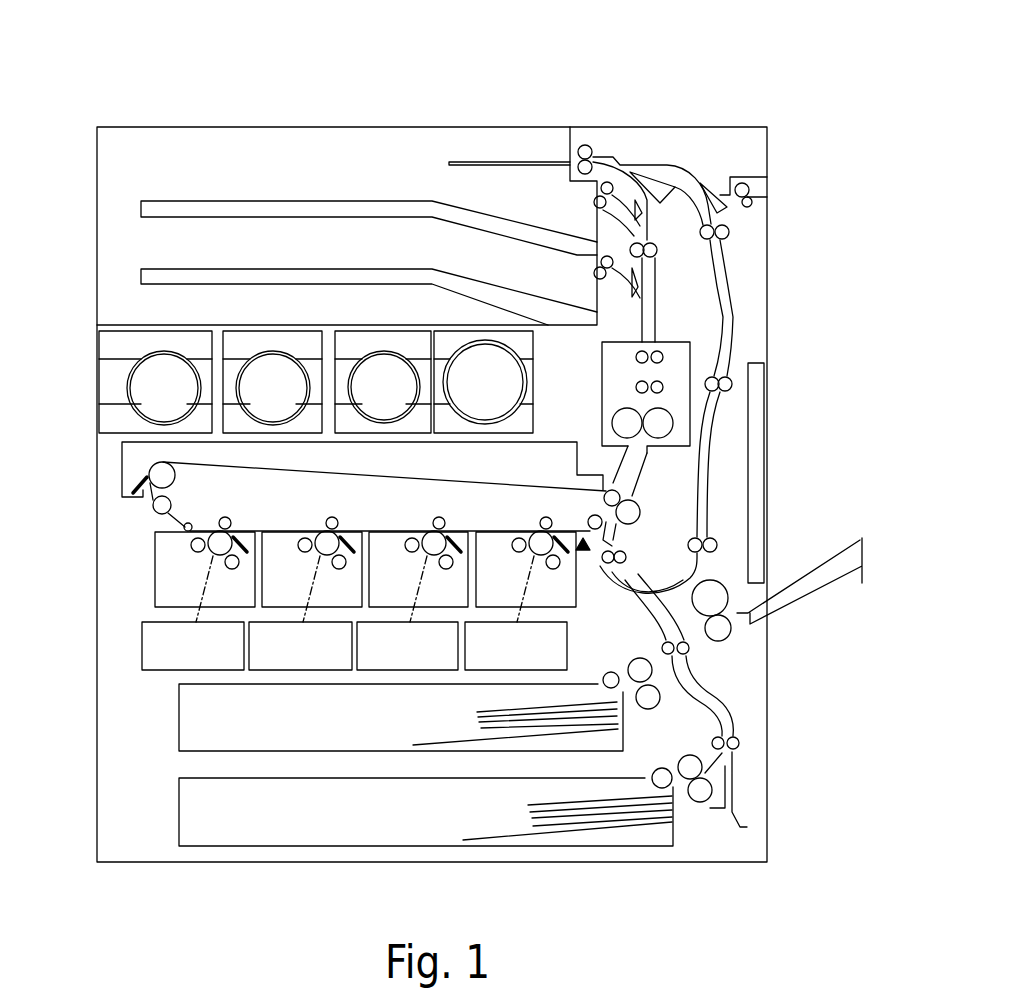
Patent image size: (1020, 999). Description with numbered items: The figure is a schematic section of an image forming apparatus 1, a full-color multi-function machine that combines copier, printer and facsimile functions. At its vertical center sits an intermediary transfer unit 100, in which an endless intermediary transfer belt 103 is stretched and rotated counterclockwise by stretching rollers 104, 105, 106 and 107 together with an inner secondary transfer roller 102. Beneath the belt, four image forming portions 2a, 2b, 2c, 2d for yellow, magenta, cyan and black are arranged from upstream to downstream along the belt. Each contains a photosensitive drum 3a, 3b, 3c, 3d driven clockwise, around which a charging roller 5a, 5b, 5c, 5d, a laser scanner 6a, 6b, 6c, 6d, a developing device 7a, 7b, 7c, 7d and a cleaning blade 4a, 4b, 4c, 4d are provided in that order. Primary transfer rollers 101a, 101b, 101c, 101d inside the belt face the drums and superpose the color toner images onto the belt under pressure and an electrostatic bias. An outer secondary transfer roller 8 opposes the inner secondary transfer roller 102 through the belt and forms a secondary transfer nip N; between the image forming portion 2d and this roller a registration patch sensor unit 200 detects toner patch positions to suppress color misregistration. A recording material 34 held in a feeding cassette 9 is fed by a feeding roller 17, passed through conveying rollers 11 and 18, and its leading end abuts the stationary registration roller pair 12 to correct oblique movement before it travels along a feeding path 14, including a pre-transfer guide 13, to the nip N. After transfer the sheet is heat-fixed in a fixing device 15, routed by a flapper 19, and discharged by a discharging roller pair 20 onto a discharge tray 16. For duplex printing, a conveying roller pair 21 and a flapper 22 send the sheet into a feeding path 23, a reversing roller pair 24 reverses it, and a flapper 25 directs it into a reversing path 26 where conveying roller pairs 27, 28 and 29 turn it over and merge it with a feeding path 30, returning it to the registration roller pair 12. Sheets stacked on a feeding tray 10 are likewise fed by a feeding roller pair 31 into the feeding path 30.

The image forming apparatus 1 is at (748, 70).
The image forming portion 2a is at (172, 608).
The image forming portion 2b is at (279, 608).
The image forming portion 2c is at (386, 608).
The image forming portion 2d is at (493, 608).
The photosensitive drum 3a is at (212, 550).
The photosensitive drum 3b is at (319, 550).
The photosensitive drum 3c is at (426, 550).
The photosensitive drum 3d is at (533, 550).
The cleaning blade 4a is at (237, 535).
The cleaning blade 4b is at (344, 535).
The cleaning blade 4c is at (451, 535).
The cleaning blade 4d is at (558, 535).
The charging roller 5a is at (233, 570).
The charging roller 5b is at (340, 570).
The charging roller 5c is at (447, 570).
The charging roller 5d is at (554, 570).
The laser scanner 6a is at (215, 656).
The laser scanner 6b is at (324, 656).
The laser scanner 6c is at (432, 656).
The laser scanner 6d is at (535, 656).
The developing device 7a is at (191, 547).
The developing device 7b is at (298, 547).
The developing device 7c is at (405, 547).
The developing device 7d is at (512, 547).
The outer secondary transfer roller 8 is at (633, 510).
The feeding cassette 9 is at (178, 732).
The feeding tray 10 is at (803, 595).
The conveying roller 11 is at (644, 659).
The registration roller pair 12 is at (626, 558).
The pre-transfer guide 13 is at (613, 540).
The feeding path 14 is at (625, 544).
The fixing device 15 is at (682, 355).
The discharge tray 16 is at (290, 200).
The feeding roller 17 is at (606, 674).
The conveying roller 18 is at (688, 645).
The flapper 19 is at (637, 292).
The discharging roller pair 20 is at (601, 190).
The conveying roller pair 21 is at (657, 252).
The flapper 22 is at (620, 212).
The feeding path 23 is at (617, 157).
The reversing roller pair 24 is at (585, 145).
The flapper 25 is at (657, 180).
The reversing path 26 is at (733, 303).
The conveying roller pair 27 is at (729, 232).
The conveying roller pair 28 is at (726, 385).
The conveying roller pair 29 is at (718, 545).
The feeding path 30 is at (628, 656).
The feeding roller pair 31 is at (713, 582).
The recording material 34 is at (487, 710).
The intermediary transfer unit 100 is at (358, 455).
The primary transfer roller 101a is at (224, 517).
The primary transfer roller 101b is at (331, 517).
The primary transfer roller 101c is at (438, 517).
The primary transfer roller 101d is at (545, 517).
The inner secondary transfer roller 102 is at (605, 478).
The intermediary transfer belt 103 is at (265, 466).
The stretching roller 104 is at (150, 472).
The stretching roller 105 is at (153, 505).
The stretching roller 106 is at (184, 528).
The stretching roller 107 is at (596, 514).
The registration patch sensor unit 200 is at (586, 552).
The secondary transfer nip N is at (645, 492).